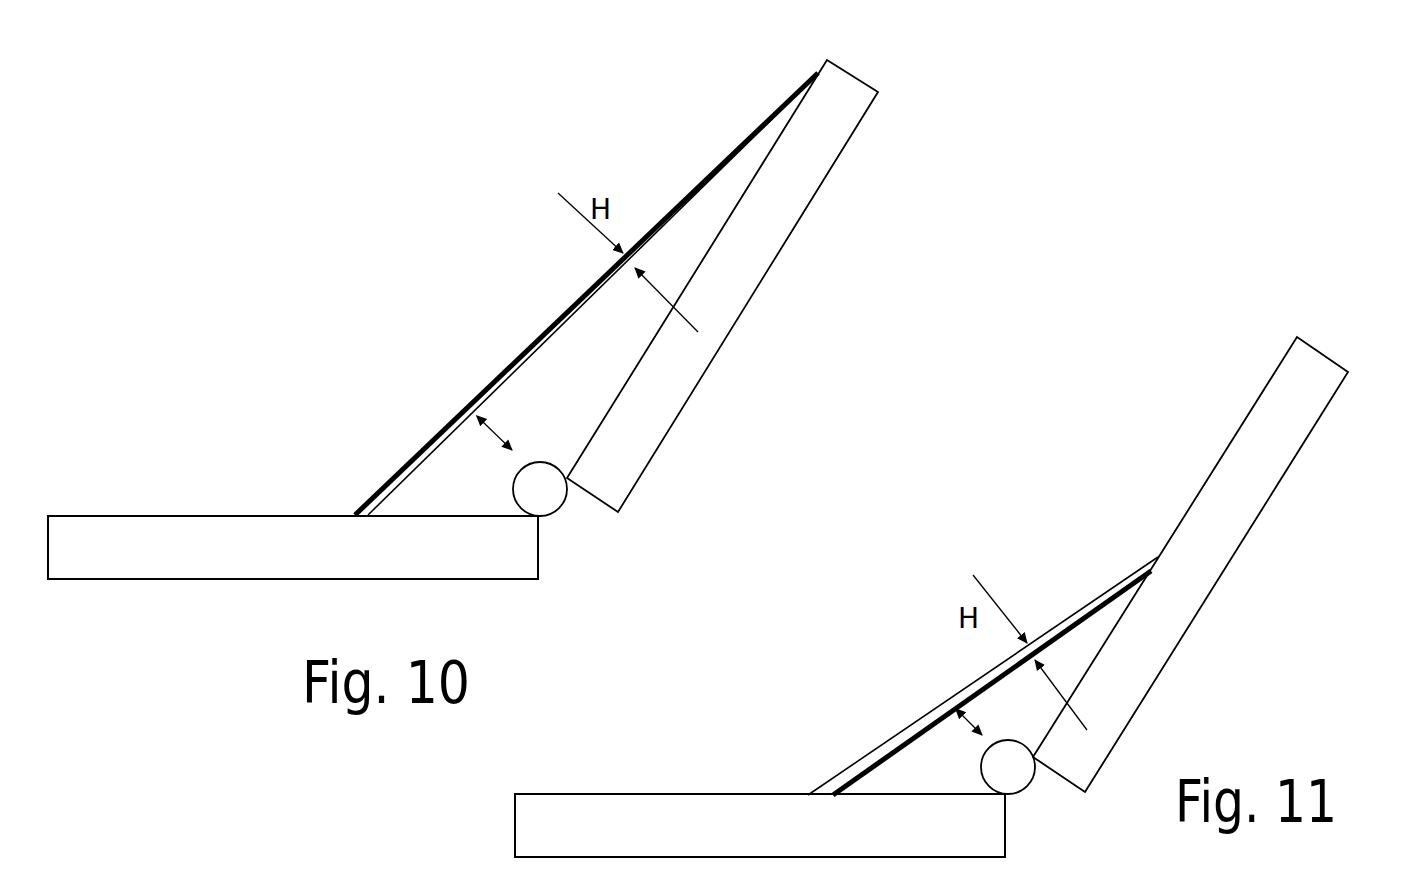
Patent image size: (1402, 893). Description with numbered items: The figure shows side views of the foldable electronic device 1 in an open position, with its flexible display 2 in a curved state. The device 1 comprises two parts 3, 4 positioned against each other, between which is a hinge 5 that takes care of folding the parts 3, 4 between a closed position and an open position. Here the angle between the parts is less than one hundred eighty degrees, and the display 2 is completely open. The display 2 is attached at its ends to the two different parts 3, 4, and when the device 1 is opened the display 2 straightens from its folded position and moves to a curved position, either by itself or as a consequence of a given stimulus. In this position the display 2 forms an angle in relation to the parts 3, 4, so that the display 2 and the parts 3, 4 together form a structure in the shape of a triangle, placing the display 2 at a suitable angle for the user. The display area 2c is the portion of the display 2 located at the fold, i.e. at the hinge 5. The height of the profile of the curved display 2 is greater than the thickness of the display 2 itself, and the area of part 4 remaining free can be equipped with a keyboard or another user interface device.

In FIG. 10, the device 1 is at (308, 277).
In FIG. 11, the device 1 is at (900, 562).
In FIG. 10, the display 2 is at (533, 355).
In FIG. 11, the display 2 is at (1083, 618).
In FIG. 10, the display area 2c is at (486, 390).
In FIG. 11, the display area 2c is at (947, 700).
In FIG. 10, the part 3 is at (772, 220).
In FIG. 11, the part 3 is at (1240, 503).
In FIG. 10, the part 4 is at (180, 543).
In FIG. 11, the part 4 is at (645, 823).
In FIG. 10, the hinge 5 is at (550, 493).
In FIG. 11, the hinge 5 is at (1015, 775).